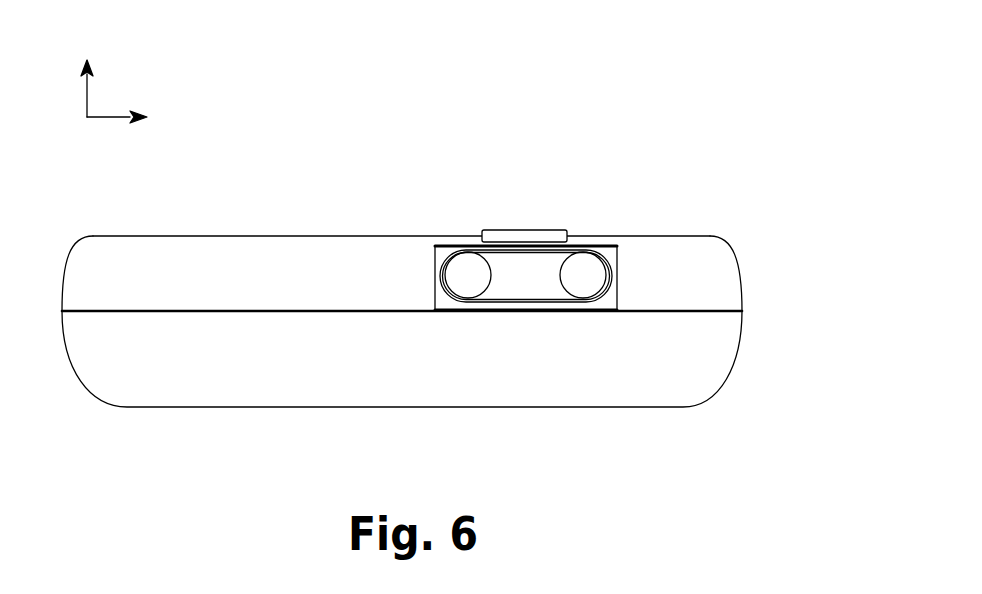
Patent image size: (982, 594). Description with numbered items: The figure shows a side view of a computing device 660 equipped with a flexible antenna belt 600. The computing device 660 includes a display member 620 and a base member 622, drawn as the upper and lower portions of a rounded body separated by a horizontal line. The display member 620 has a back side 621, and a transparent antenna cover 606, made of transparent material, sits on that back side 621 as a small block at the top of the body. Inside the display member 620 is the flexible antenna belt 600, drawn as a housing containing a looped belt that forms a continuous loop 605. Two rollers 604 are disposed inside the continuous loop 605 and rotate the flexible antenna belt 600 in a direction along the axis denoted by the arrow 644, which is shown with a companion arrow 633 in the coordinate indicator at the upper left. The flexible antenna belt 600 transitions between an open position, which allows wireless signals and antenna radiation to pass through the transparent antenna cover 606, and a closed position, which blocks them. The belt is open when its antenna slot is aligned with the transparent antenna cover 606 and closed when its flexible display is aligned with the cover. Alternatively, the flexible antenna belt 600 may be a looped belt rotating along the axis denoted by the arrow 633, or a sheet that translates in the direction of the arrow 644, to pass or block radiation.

The flexible antenna belt 600 is at (458, 317).
The rollers 604 is at (463, 290).
The continuous loop 605 is at (527, 282).
The transparent antenna cover 606 is at (525, 228).
The display member 620 is at (438, 242).
The back side 621 is at (245, 237).
The base member 622 is at (720, 355).
The arrow 633 is at (88, 75).
The arrow 644 is at (135, 119).
The computing device 660 is at (438, 246).